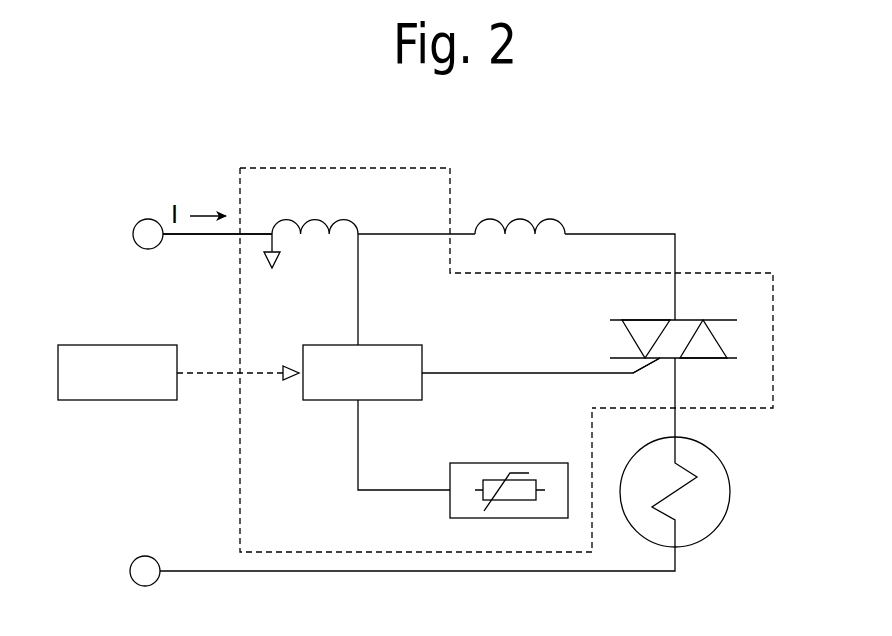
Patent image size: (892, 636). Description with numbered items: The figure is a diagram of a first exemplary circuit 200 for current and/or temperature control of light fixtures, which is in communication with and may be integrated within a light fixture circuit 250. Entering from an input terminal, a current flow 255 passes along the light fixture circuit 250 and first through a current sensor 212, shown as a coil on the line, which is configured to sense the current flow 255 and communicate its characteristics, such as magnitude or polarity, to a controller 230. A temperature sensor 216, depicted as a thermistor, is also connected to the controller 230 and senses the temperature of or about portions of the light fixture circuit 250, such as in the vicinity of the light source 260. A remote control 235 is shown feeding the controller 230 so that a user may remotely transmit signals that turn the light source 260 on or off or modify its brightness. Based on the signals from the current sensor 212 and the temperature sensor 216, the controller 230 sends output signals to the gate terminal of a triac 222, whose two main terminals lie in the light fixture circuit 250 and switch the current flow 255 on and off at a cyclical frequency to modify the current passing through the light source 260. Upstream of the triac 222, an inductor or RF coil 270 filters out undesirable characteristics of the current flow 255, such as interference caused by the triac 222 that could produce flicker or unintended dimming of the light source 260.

The circuit 200 is at (725, 272).
The current sensor 212 is at (306, 212).
The temperature sensor 216 is at (478, 455).
The triac 222 is at (660, 312).
The controller 230 is at (370, 388).
The remote control 235 is at (108, 388).
The light fixture circuit 250 is at (490, 162).
The current flow 255 is at (200, 193).
The light source 260 is at (735, 462).
The RF coil 270 is at (513, 205).